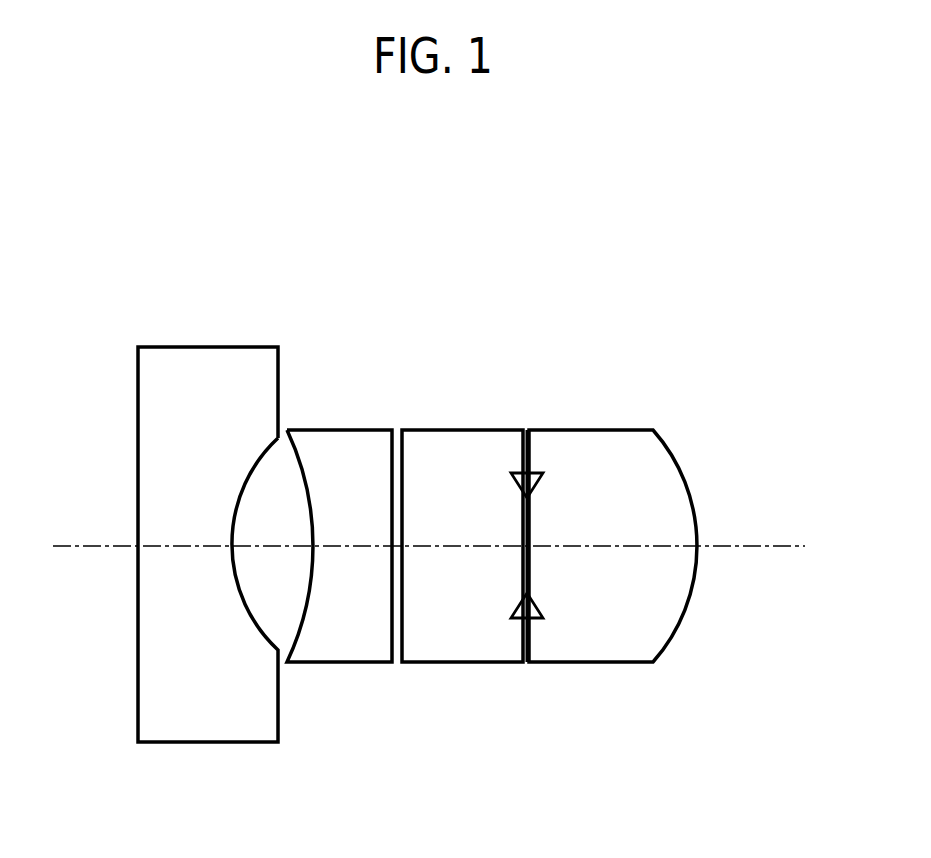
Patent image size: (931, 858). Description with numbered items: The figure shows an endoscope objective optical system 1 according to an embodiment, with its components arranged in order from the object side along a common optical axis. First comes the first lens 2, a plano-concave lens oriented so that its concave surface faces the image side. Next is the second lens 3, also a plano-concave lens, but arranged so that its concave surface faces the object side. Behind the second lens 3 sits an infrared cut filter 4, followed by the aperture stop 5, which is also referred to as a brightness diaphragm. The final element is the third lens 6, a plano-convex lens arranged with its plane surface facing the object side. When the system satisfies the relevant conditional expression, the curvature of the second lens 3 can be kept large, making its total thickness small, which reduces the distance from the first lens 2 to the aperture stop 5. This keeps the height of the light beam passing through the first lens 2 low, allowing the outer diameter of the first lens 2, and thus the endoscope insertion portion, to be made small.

The endoscope objective optical system 1 is at (538, 287).
The first lens 2 is at (210, 347).
The second lens 3 is at (342, 430).
The infrared cut filter 4 is at (465, 430).
The aperture stop 5 is at (533, 470).
The third lens 6 is at (612, 430).